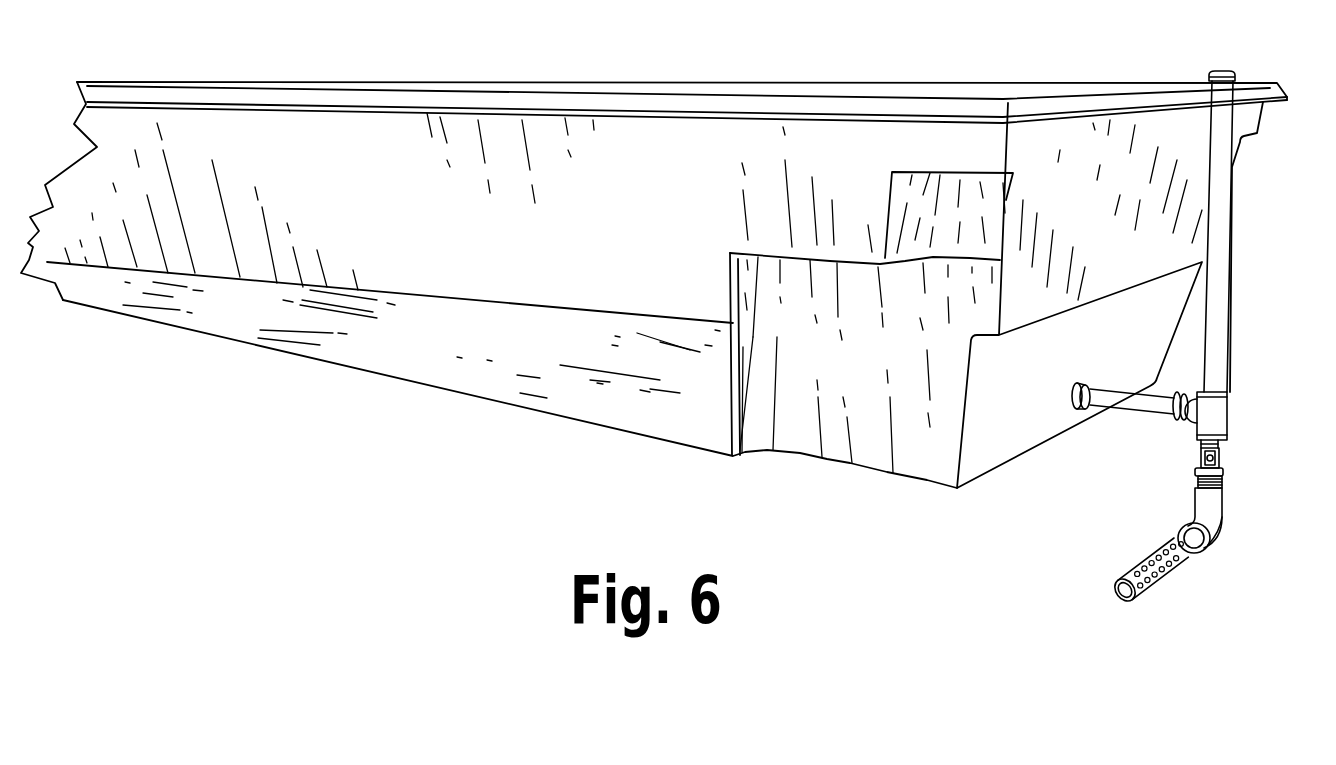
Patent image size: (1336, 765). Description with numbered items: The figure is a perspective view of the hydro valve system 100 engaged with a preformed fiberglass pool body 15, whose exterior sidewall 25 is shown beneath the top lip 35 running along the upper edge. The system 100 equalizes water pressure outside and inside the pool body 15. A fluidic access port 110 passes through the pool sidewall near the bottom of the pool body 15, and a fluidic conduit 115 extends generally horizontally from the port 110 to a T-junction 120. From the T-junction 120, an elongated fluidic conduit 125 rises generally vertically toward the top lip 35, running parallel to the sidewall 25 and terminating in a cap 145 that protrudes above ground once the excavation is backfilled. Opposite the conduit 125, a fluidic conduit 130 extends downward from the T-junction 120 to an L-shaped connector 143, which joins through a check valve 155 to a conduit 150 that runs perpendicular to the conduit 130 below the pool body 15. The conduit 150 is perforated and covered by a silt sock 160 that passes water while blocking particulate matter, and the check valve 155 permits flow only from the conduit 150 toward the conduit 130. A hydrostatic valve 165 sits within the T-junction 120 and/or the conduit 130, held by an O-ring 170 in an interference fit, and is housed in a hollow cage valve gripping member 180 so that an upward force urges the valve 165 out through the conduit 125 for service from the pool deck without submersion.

The pool body 15 is at (435, 343).
The exterior sidewall 25 is at (1043, 157).
The top lip 35 is at (1257, 88).
The hydro valve system 100 is at (1139, 327).
The fluidic access port 110 is at (1083, 380).
The fluidic conduit 115 is at (1147, 417).
The T-junction 120 is at (1227, 410).
The elongated fluidic conduit 125 is at (1222, 343).
The fluidic conduit 130 is at (1223, 507).
The L-shaped connector 143 is at (1220, 525).
The cap 145 is at (1220, 72).
The conduit 150 is at (1183, 560).
The check valve 155 is at (1207, 548).
The silt sock 160 is at (1163, 589).
The hydrostatic valve 165 is at (1227, 448).
The O-ring 170 is at (1227, 480).
The valve gripping member 180 is at (1200, 457).